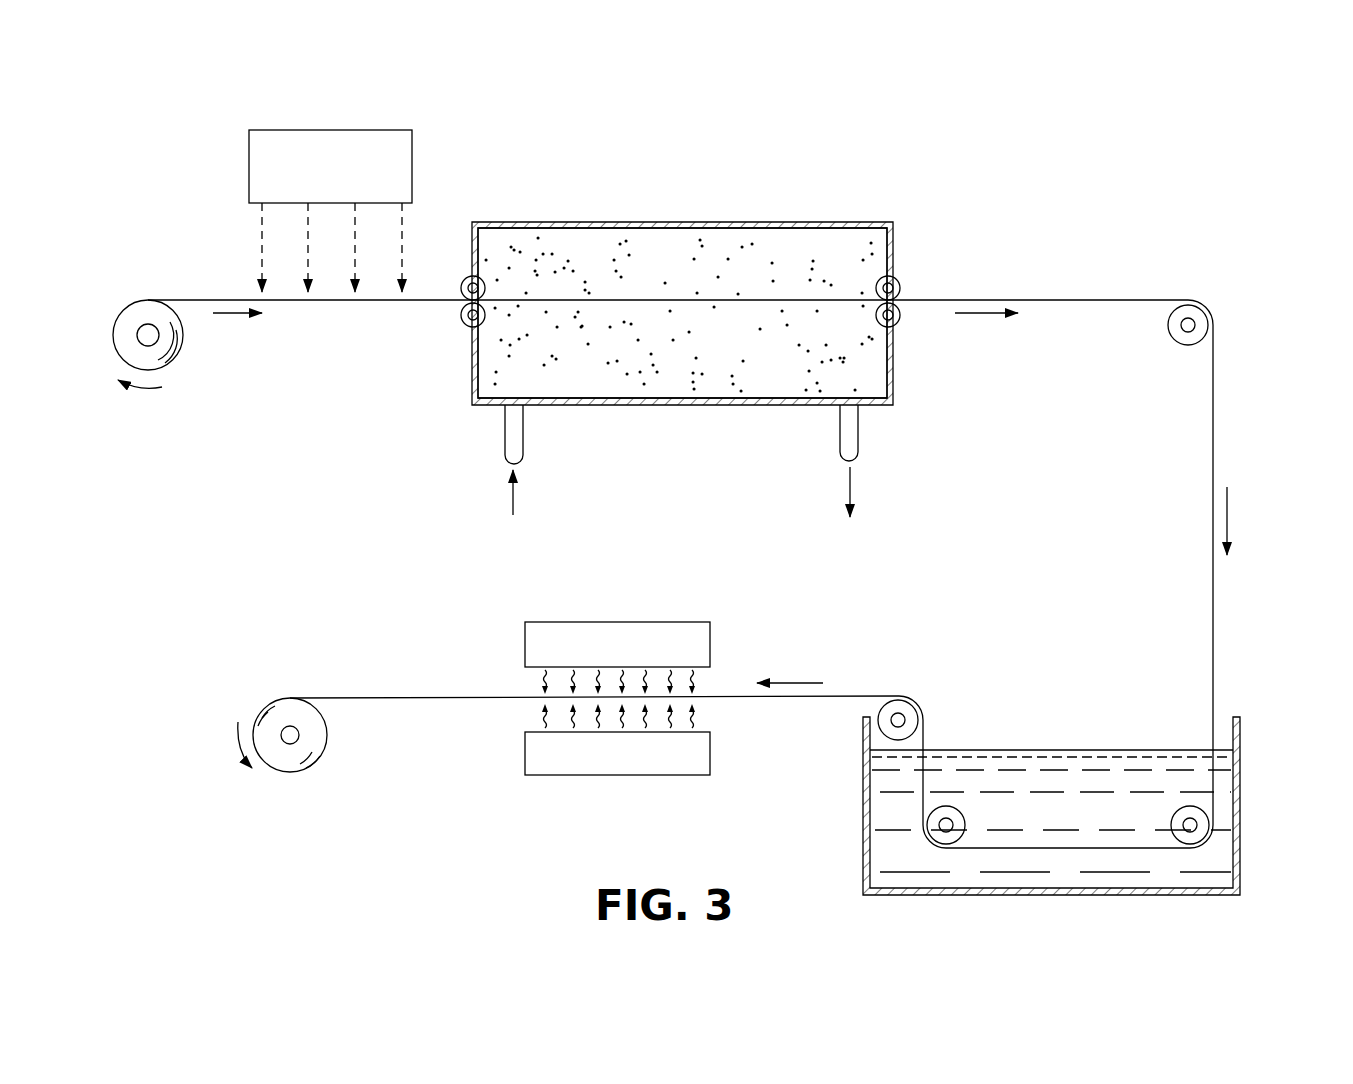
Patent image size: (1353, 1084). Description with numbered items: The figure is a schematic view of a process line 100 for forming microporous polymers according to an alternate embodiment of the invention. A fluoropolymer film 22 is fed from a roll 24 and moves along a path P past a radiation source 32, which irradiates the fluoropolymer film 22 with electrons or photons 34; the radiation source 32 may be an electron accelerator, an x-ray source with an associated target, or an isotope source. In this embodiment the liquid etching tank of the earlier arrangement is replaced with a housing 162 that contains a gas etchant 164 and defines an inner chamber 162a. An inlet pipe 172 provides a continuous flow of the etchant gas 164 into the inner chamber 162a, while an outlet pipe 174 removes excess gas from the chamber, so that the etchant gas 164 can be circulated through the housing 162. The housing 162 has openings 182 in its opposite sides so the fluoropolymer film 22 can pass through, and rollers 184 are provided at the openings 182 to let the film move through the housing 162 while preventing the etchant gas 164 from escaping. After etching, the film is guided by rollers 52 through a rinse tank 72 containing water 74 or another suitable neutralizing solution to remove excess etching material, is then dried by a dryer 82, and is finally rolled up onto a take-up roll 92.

The process line 100 is at (985, 122).
The fluoropolymer film 22 is at (183, 298).
The roll 24 is at (165, 367).
The radiation source 32 is at (372, 129).
The electrons or photons 34 is at (308, 250).
The guide rollers 52 is at (1178, 335).
The rinse tank 72 is at (862, 778).
The water 74 is at (1022, 765).
The dryer 82 is at (610, 622).
The take-up roll 92 is at (300, 753).
The housing 162 is at (702, 222).
The inner chamber 162a is at (822, 238).
The gas etchant 164 is at (607, 265).
The inlet pipe 172 is at (510, 433).
The outlet pipe 174 is at (856, 431).
The openings 182 is at (461, 305).
The rollers 184 is at (465, 278).
The path P is at (233, 313).